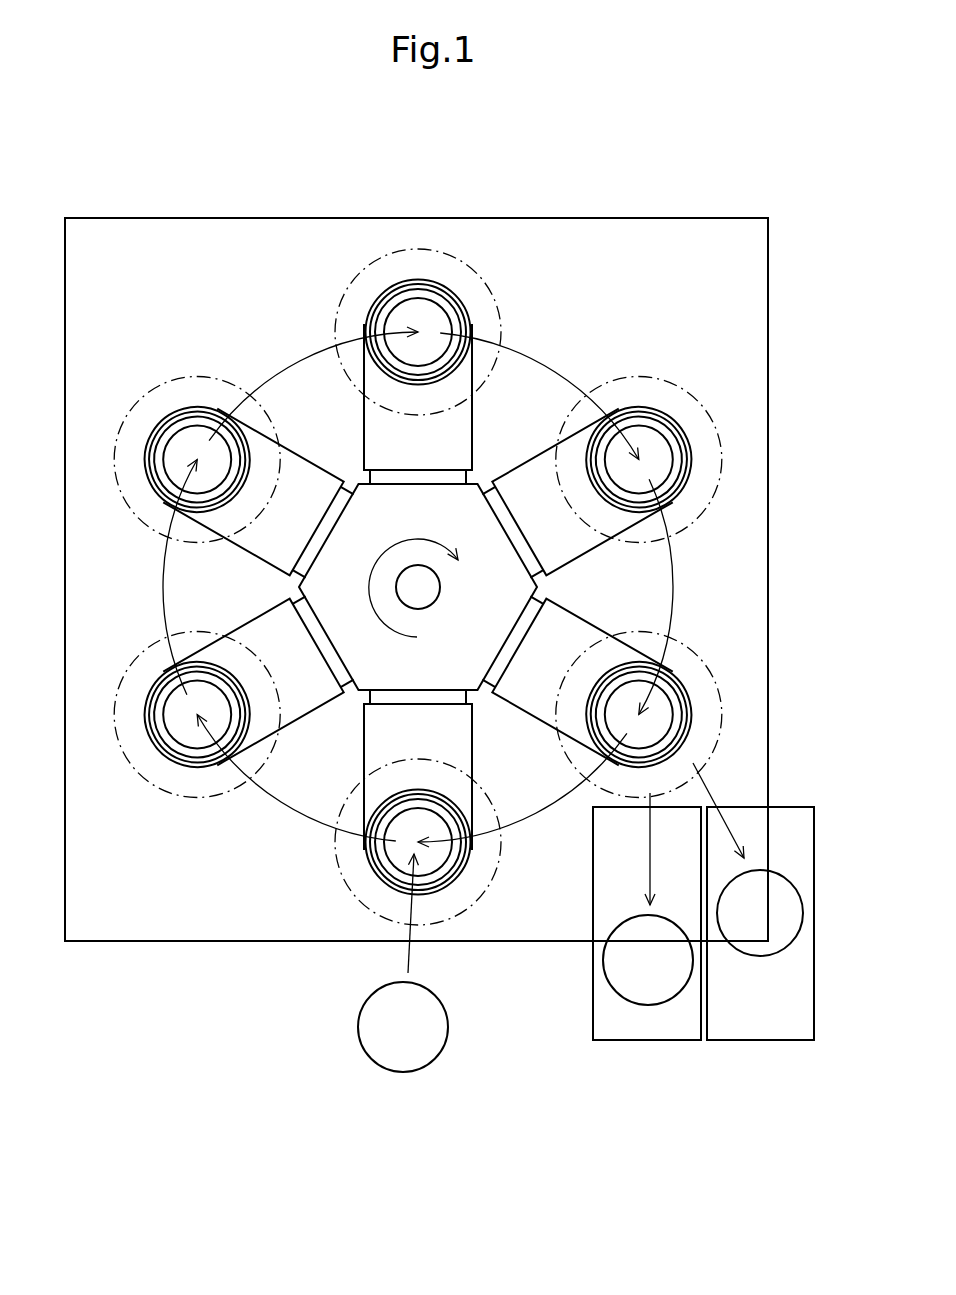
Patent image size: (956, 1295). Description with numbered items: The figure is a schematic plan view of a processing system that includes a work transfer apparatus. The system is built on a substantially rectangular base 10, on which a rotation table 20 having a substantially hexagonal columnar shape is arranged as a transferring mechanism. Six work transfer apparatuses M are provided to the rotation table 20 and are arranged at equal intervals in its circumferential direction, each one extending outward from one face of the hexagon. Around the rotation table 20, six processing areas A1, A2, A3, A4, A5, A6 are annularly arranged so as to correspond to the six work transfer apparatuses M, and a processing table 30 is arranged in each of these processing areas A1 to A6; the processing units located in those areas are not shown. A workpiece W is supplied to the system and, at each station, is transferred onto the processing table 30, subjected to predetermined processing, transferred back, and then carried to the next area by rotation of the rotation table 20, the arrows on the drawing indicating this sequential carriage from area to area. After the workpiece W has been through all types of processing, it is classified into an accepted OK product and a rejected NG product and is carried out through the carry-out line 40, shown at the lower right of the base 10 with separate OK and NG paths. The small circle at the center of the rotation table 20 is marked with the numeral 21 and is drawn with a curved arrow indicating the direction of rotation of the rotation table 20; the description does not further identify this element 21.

The base 10 is at (202, 216).
The rotation table 20 is at (543, 583).
The rotation axis 21 is at (440, 588).
The processing table 30 is at (447, 300).
The work transfer apparatus M is at (372, 304).
The processing area A1 is at (500, 840).
The processing area A2 is at (123, 765).
The processing area A3 is at (165, 378).
The processing area A4 is at (500, 286).
The processing area A5 is at (690, 390).
The processing area A6 is at (710, 670).
The workpiece W is at (360, 1053).
The carry-out line 40 is at (722, 1042).